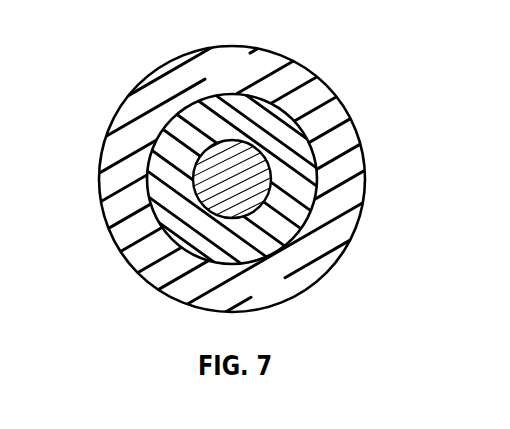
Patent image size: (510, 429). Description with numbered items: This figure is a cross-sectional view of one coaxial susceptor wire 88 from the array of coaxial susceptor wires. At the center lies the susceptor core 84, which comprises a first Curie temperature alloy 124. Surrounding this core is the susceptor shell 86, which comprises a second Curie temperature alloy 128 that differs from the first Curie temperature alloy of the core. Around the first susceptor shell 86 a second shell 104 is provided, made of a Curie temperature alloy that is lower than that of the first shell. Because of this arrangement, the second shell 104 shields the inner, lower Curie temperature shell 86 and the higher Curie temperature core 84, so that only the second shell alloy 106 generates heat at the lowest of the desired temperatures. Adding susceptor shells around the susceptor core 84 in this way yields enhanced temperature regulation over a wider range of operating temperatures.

The coaxial susceptor wire 88 is at (241, 169).
The second shell 104 is at (370, 177).
The second shell alloy 106 is at (250, 80).
The susceptor shell 86 is at (233, 264).
The second Curie temperature alloy 128 is at (177, 183).
The susceptor core 84 is at (230, 216).
The first Curie temperature alloy 124 is at (252, 167).